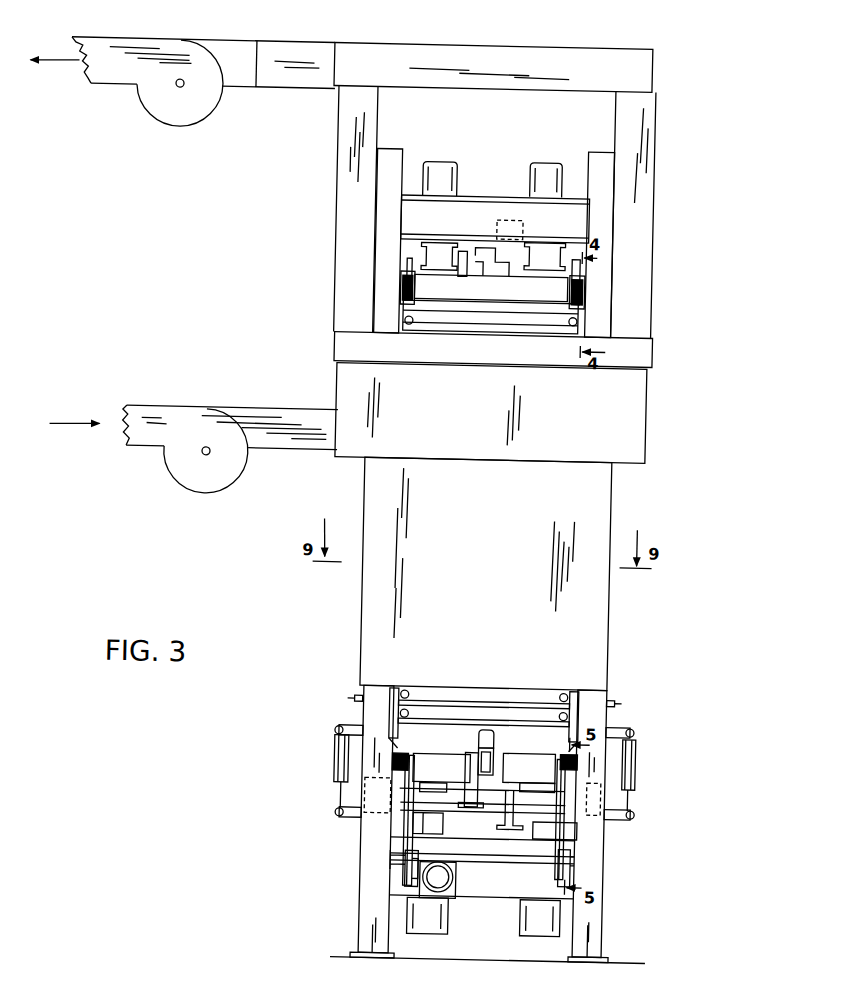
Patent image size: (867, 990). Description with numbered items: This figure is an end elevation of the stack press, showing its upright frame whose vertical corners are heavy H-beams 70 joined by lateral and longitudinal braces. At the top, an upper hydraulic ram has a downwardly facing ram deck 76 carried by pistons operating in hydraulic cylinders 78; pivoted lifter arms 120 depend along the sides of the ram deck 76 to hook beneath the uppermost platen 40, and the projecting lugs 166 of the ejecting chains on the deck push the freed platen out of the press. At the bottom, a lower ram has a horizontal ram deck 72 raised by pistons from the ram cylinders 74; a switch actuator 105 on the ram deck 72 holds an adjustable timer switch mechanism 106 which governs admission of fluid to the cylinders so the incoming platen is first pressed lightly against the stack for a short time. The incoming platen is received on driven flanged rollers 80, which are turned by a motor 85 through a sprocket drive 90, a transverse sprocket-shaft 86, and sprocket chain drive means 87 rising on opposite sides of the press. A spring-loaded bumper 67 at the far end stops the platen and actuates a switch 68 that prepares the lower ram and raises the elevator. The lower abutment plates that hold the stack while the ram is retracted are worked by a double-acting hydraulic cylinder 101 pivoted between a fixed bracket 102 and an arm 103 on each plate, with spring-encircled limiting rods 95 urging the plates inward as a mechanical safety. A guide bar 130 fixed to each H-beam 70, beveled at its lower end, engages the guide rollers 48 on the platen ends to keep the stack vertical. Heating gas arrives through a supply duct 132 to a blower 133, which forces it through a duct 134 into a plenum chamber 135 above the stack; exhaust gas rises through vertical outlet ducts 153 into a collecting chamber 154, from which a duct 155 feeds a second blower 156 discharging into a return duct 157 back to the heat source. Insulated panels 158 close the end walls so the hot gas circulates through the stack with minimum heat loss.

The platen 40 is at (476, 320).
The guide rollers 48 is at (405, 326).
The spring-loaded bumper 67 is at (499, 737).
The switch 68 is at (499, 762).
The H-beams 70 is at (380, 152).
The ram deck 72 is at (446, 771).
The ram cylinders 74 is at (539, 919).
The ram deck 76 is at (449, 296).
The hydraulic cylinders 78 is at (528, 171).
The flanged rollers 80 is at (401, 757).
The motor 85 is at (461, 874).
The sprocket-shaft 86 is at (548, 861).
The sprocket chain drive means 87 is at (410, 829).
The sprocket drive 90 is at (418, 879).
The limiting rods 95 is at (352, 701).
The cylinder 101 is at (344, 765).
The fixed bracket 102 is at (343, 815).
The arm 103 is at (340, 733).
The switch actuator 105 is at (522, 821).
The timer switch mechanism 106 is at (560, 831).
The lifter arms 120 is at (401, 300).
The guide bar 130 is at (397, 690).
The supply duct 132 is at (141, 445).
The blower 133 is at (210, 489).
The duct 134 is at (301, 449).
The plenum chamber 135 is at (483, 425).
The vertical outlet ducts 153 is at (339, 208).
The collecting chamber 154 is at (460, 54).
The duct 155 is at (227, 53).
The second blower 156 is at (187, 127).
The return duct 157 is at (99, 83).
The insulated panels 158 is at (473, 570).
The projecting lugs 166 is at (405, 262).